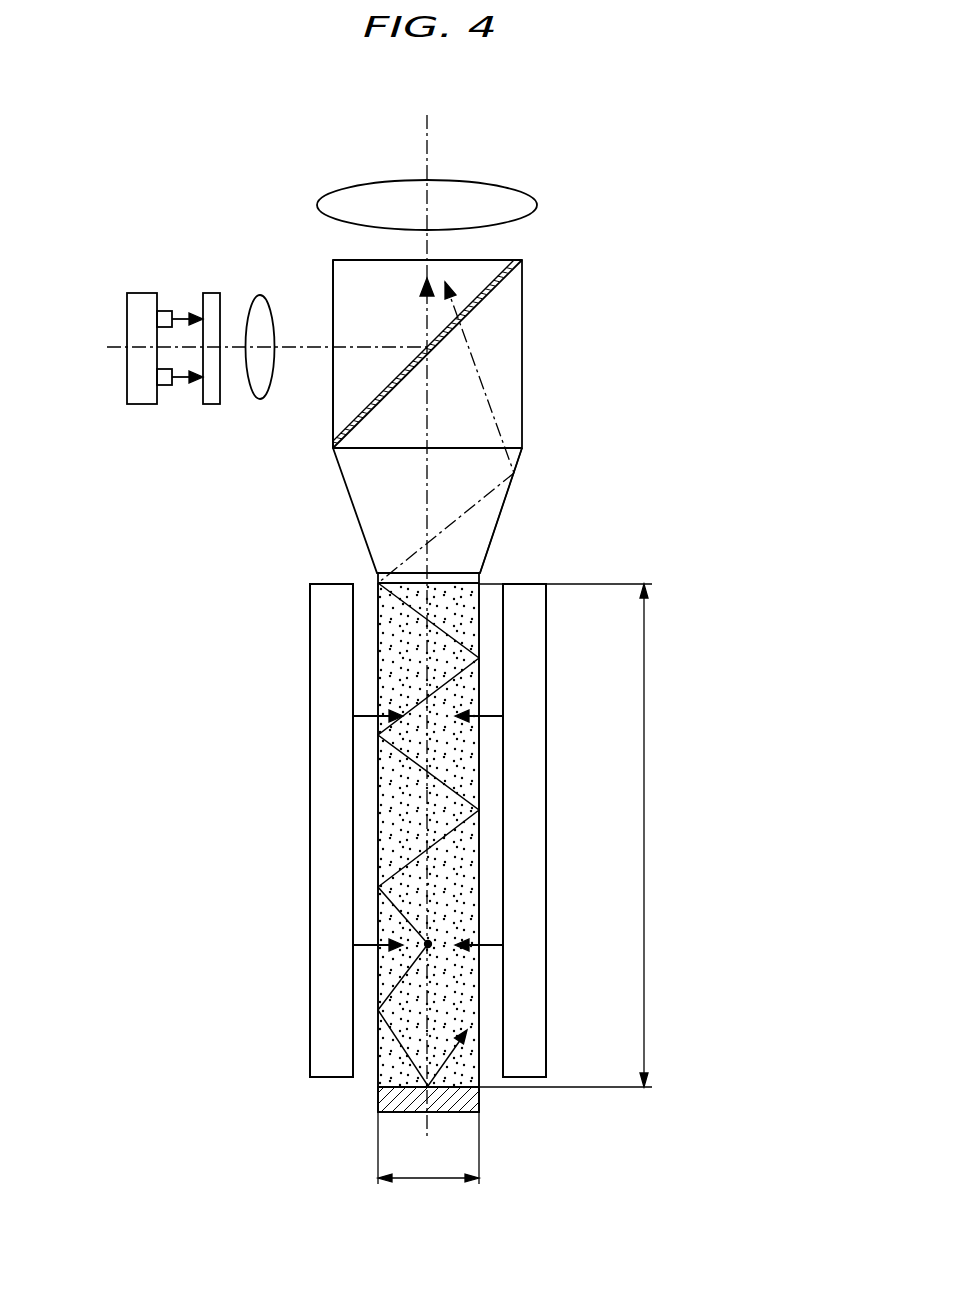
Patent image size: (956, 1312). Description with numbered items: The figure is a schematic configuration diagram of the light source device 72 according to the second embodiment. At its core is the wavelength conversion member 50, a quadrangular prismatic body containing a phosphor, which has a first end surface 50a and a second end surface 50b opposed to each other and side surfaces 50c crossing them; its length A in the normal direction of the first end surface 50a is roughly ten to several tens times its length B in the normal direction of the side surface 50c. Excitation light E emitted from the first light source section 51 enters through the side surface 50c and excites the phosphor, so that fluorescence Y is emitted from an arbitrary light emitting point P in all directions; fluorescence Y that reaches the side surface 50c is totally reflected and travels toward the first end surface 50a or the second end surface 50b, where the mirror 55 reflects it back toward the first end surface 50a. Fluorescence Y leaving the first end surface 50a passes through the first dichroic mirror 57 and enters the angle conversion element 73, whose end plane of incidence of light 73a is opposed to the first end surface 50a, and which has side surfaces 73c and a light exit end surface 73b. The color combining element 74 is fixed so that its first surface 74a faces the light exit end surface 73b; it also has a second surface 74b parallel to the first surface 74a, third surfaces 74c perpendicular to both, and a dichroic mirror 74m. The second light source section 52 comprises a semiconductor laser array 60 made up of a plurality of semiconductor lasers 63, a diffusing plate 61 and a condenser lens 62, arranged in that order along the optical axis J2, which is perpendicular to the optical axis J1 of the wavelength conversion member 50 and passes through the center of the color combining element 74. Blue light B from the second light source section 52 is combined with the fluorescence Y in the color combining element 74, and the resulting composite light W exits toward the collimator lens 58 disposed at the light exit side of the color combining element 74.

The light source device 72 is at (390, 152).
The collimator lens 58 is at (357, 197).
The second light source section 52 is at (120, 212).
The semiconductor laser array 60 is at (143, 302).
The diffusing plate 61 is at (212, 300).
The condenser lens 62 is at (262, 298).
The semiconductor laser 63 is at (162, 320).
The color combining element 74 is at (510, 377).
The first surface 74a is at (383, 448).
The second surface 74b is at (500, 260).
The third surface 74c is at (333, 422).
The dichroic mirror 74m is at (480, 300).
The angle conversion element 73 is at (492, 518).
The end plane of incidence of light 73a is at (397, 573).
The light exit end surface 73b is at (492, 447).
The side surface 73c is at (510, 487).
The wavelength conversion member 50 is at (462, 910).
The first end surface 50a is at (460, 578).
The second end surface 50b is at (452, 1088).
The side surface 50c is at (378, 790).
The first light source section 51 is at (318, 733).
The mirror 55 is at (403, 1112).
The first dichroic mirror 57 is at (415, 582).
The optical axis of the wavelength conversion member J1 is at (430, 150).
The optical axis of the second light source section J2 is at (298, 345).
The composite light W is at (458, 297).
The blue light B is at (183, 379).
The excitation light E is at (492, 712).
The fluorescence Y is at (415, 848).
The length A is at (573, 835).
The light emitting point P is at (428, 944).